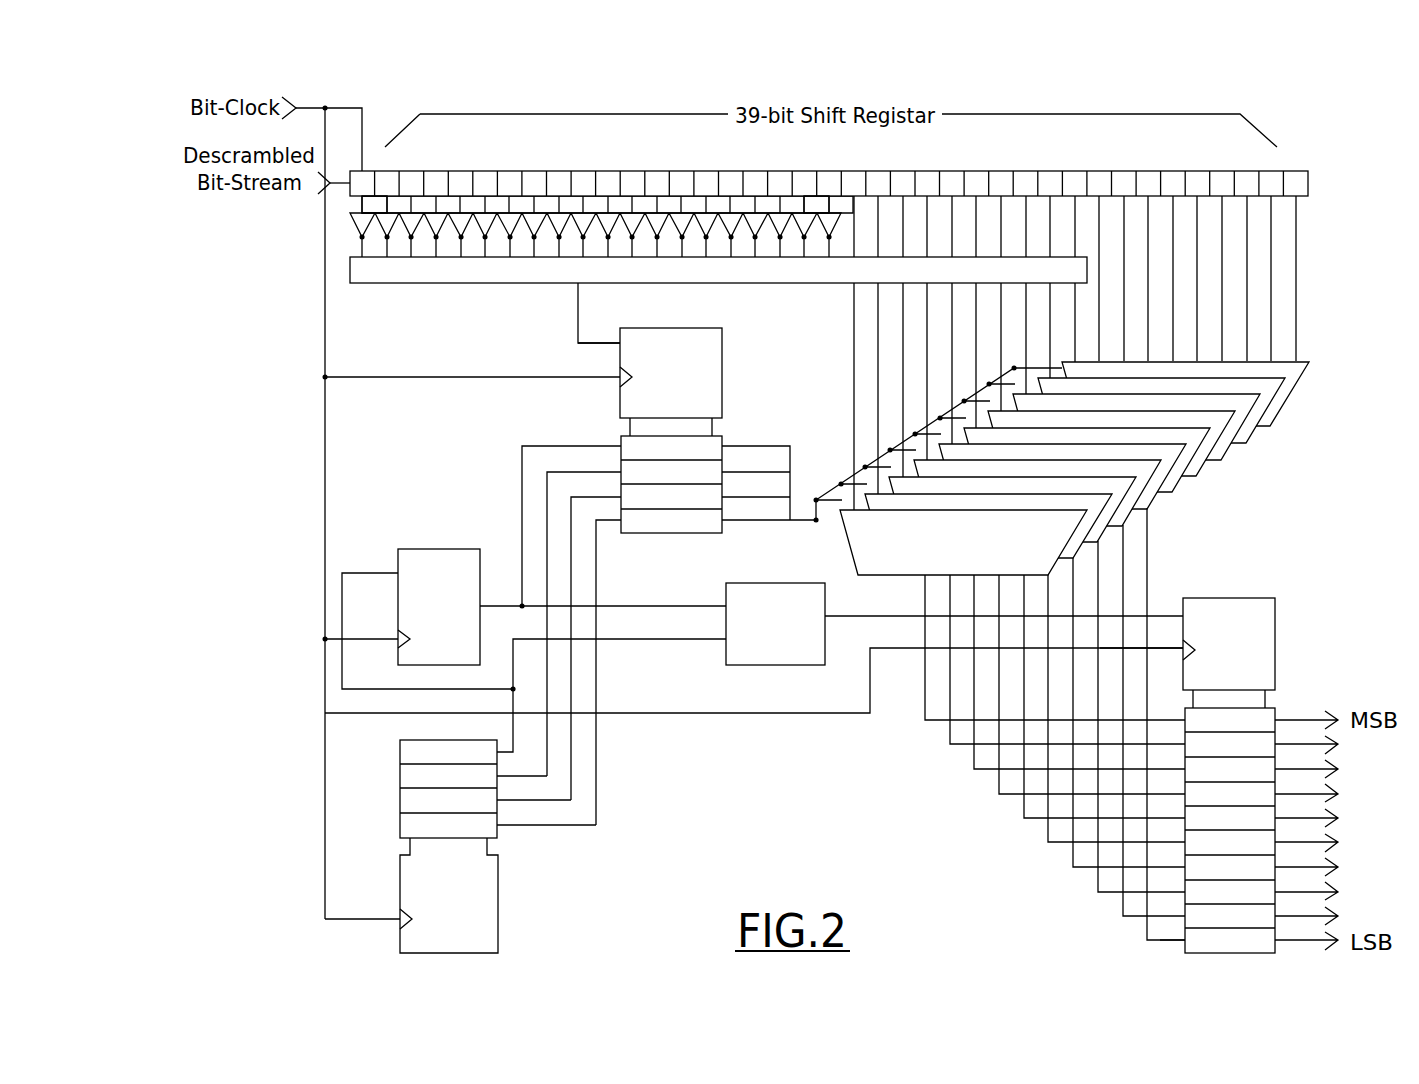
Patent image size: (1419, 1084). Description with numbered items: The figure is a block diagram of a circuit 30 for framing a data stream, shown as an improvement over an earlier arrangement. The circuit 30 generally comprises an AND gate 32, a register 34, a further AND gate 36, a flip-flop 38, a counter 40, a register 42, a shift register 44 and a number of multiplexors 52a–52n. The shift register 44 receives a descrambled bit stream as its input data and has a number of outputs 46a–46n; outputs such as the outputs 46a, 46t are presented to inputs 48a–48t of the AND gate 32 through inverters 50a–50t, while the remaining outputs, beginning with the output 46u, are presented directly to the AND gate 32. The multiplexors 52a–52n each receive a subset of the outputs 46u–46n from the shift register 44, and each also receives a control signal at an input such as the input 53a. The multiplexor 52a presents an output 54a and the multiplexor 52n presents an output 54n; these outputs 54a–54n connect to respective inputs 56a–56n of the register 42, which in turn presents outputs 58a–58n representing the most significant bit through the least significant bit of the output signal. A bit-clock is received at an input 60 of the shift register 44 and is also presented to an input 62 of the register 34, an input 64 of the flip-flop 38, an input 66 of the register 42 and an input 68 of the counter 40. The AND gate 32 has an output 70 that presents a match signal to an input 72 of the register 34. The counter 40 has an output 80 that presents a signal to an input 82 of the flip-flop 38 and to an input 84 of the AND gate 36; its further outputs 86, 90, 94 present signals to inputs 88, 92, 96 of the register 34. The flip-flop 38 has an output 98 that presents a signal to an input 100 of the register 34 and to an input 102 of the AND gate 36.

The circuit 30 is at (260, 712).
The AND gate 32 is at (448, 284).
The register 34 is at (722, 355).
The AND gate 36 is at (780, 667).
The flip-flop 38 is at (440, 549).
The counter 40 is at (498, 895).
The register 42 is at (1225, 598).
The shift register 44 is at (1312, 182).
The output 46a is at (362, 198).
The output 46t is at (832, 205).
The output 46u is at (854, 224).
The output 46n is at (1297, 255).
The input 48a is at (362, 254).
The input 48t is at (836, 242).
The inverter 50a is at (378, 222).
The inverter 50t is at (826, 235).
The multiplexor 52a is at (887, 577).
The multiplexor 52n is at (1295, 393).
The input 53a is at (843, 523).
The output 54a is at (900, 617).
The output 54n is at (1147, 563).
The input 56a is at (1185, 712).
The input 56n is at (1185, 952).
The output 58a is at (1276, 710).
The output 58n is at (1276, 953).
The input 60 is at (358, 172).
The input 62 is at (618, 384).
The input 64 is at (398, 630).
The input 66 is at (1182, 642).
The input 68 is at (396, 919).
The output 70 is at (580, 286).
The input 72 is at (618, 352).
The output 80 is at (498, 756).
The input 82 is at (398, 563).
The input 84 is at (725, 633).
The output 86 is at (498, 780).
The input 88 is at (620, 470).
The output 90 is at (498, 804).
The input 92 is at (620, 495).
The output 94 is at (498, 829).
The input 96 is at (620, 520).
The output 98 is at (481, 609).
The input 100 is at (620, 447).
The input 102 is at (725, 600).